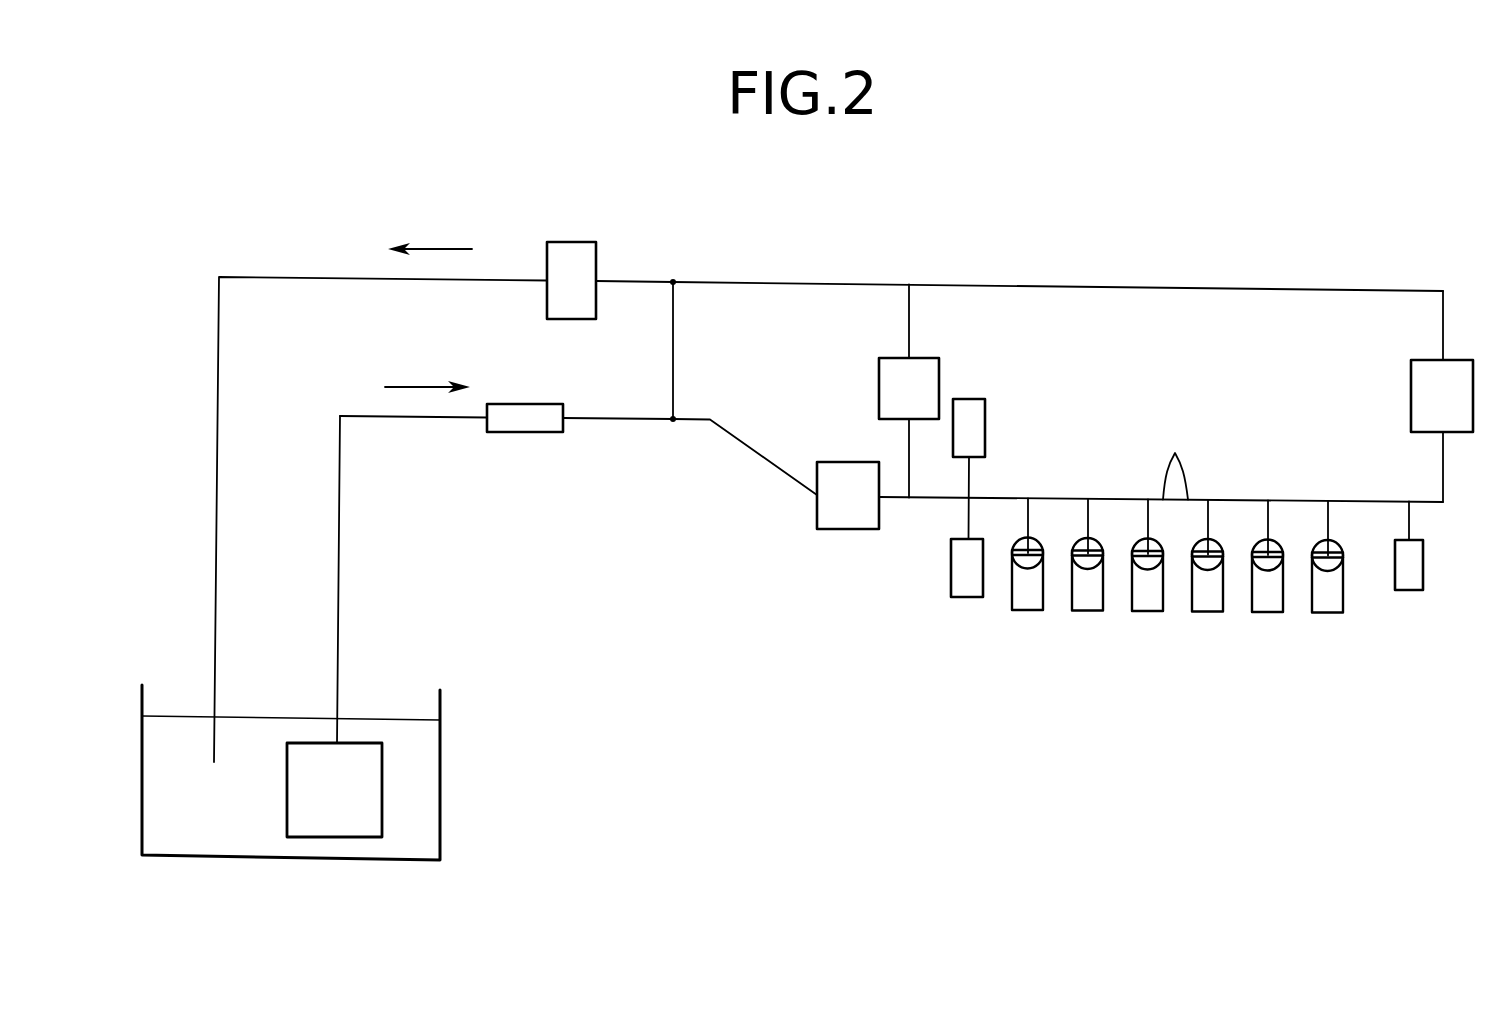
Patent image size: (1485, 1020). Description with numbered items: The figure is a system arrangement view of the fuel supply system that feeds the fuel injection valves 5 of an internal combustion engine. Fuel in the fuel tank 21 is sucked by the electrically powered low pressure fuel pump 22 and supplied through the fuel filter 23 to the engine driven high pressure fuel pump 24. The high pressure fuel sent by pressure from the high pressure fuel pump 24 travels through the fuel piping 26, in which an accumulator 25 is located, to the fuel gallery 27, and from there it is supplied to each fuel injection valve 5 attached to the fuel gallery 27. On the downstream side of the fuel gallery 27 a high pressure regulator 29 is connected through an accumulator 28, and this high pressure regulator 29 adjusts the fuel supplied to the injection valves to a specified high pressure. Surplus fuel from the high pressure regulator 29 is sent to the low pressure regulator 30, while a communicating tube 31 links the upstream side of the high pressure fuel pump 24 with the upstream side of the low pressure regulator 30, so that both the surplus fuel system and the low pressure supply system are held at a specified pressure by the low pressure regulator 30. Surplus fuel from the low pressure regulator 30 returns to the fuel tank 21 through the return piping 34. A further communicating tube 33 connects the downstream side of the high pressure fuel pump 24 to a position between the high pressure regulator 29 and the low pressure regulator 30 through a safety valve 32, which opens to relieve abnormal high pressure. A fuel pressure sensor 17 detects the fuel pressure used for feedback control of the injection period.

The fuel injection valve 5 is at (1350, 658).
The fuel pressure sensor 17 is at (985, 420).
The fuel tank 21 is at (440, 790).
The low pressure fuel pump 22 is at (352, 755).
The fuel filter 23 is at (535, 404).
The high pressure fuel pump 24 is at (817, 518).
The accumulator 25 is at (967, 597).
The fuel piping 26 is at (921, 500).
The fuel gallery 27 is at (1202, 459).
The accumulator 28 is at (1409, 590).
The high pressure regulator 29 is at (1411, 395).
The low pressure regulator 30 is at (565, 242).
The communicating tube 31 is at (673, 375).
The safety valve 32 is at (879, 387).
The communicating tube 33 is at (909, 322).
The return piping 34 is at (219, 380).